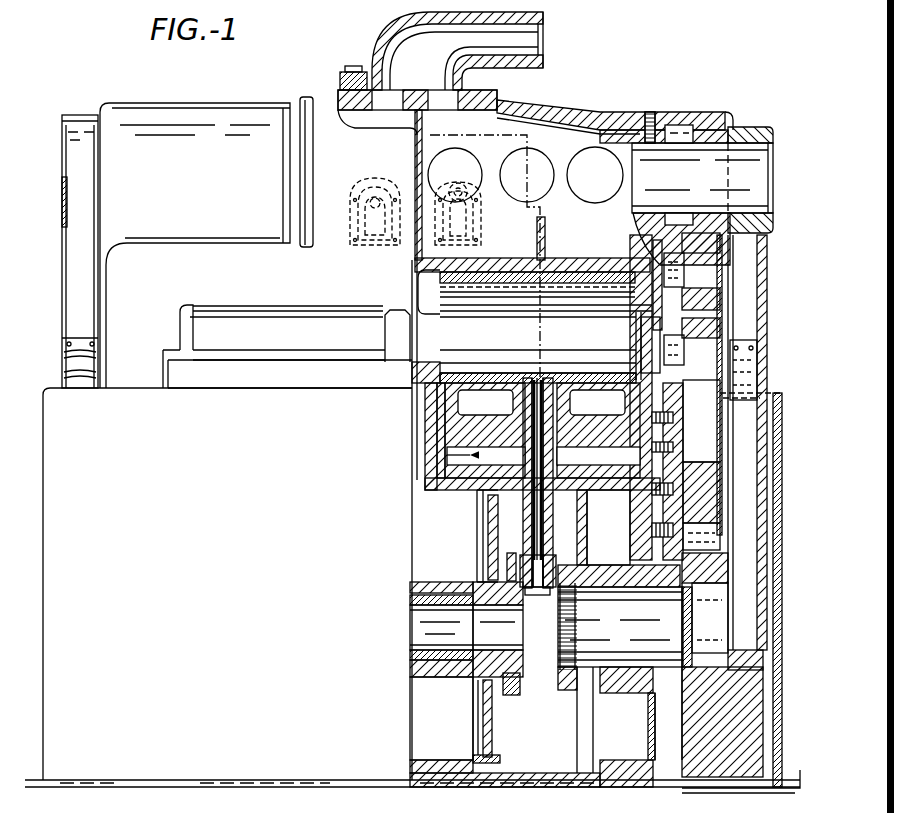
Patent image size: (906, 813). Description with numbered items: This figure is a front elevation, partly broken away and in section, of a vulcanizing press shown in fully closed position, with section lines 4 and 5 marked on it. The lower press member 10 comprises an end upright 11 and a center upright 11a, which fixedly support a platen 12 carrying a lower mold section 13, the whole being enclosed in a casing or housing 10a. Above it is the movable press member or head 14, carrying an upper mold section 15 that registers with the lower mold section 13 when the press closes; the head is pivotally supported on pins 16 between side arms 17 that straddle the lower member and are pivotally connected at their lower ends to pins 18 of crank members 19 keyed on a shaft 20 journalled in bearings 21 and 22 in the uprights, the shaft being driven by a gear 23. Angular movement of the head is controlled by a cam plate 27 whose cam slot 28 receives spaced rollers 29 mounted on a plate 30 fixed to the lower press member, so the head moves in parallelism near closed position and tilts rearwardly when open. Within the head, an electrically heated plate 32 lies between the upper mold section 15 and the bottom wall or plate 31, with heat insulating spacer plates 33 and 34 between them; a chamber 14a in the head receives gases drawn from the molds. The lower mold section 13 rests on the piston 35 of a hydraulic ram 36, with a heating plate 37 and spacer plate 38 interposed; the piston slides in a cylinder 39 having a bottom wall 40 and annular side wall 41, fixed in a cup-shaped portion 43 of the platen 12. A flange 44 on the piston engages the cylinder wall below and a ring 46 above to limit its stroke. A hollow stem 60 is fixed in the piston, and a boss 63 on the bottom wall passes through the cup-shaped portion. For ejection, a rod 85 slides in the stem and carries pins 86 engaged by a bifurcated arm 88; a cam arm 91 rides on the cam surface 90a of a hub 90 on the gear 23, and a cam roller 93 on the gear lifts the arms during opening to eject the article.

The section line 4- 4 is at (524, 355).
The section line 5- 5 is at (430, 90).
The lower press member 10 is at (147, 383).
The casing or housing 10a is at (60, 764).
The end upright 11 is at (653, 724).
The center upright 11a is at (418, 700).
The platen 12 is at (417, 399).
The lower mold section 13 is at (420, 330).
The movable press member or head 14 is at (588, 108).
The chamber 14a is at (392, 37).
The upper mold section 15 is at (450, 303).
The pin 16 is at (757, 173).
The side arm 17 is at (75, 252).
The pin 18 is at (760, 712).
The crank member 19 is at (700, 768).
The shaft 20 is at (623, 650).
The bearing 21 is at (583, 700).
The bearing 22 is at (438, 670).
The gear 23 is at (483, 732).
The cam plate 27 is at (703, 488).
The cam slot 28 is at (703, 435).
The roller 29 is at (700, 325).
The plate 30 is at (683, 367).
The bottom wall or plate 31 is at (563, 272).
The electrically heated plate 32 is at (416, 276).
The heat insulating spacer plate 33 is at (590, 273).
The heat insulating spacer plate 34 is at (487, 272).
The piston 35 is at (457, 395).
The hydraulic ram 36 is at (420, 456).
The electrical heating plate 37 is at (465, 358).
The heat-insulating spacer plate 38 is at (570, 367).
The cylinder 39 is at (437, 443).
The bottom wall 40 is at (463, 488).
The annular side wall 41 is at (433, 416).
The cup-shaped portion 43 is at (427, 487).
The annular flange 44 is at (413, 379).
The ring 46 is at (420, 370).
The hollow stem or rod 60 is at (566, 400).
The boss 63 is at (583, 504).
The rod 85 is at (540, 537).
The pin 86 is at (518, 569).
The arm 88 is at (557, 549).
The hub 90 is at (497, 600).
The cam surface 90a is at (513, 600).
The cam arm 91 is at (510, 563).
The cam roller 93 is at (513, 698).